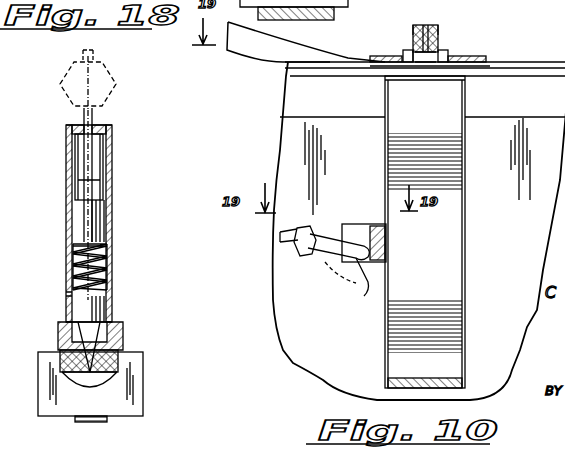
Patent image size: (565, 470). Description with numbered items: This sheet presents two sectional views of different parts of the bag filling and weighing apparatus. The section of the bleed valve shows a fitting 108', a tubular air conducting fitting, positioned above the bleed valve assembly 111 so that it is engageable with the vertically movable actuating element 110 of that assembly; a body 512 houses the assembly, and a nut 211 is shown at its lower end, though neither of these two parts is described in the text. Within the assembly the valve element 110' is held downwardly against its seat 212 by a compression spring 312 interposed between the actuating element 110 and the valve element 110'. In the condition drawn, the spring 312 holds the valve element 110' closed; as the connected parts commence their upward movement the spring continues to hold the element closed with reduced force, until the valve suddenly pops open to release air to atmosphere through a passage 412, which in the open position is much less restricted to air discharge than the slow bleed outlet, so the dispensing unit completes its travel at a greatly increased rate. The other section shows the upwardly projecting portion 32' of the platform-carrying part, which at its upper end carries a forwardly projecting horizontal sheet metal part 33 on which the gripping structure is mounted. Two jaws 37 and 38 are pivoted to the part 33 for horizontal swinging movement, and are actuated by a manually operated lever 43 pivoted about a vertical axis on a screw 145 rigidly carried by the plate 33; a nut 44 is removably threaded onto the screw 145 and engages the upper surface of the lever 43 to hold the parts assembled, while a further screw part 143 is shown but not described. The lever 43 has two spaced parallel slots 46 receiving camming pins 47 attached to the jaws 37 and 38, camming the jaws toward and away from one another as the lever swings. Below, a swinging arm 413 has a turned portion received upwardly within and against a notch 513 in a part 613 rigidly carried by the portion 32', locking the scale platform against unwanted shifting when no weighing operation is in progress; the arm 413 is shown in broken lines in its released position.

In FIG. 18, the tubular air conducting fitting 108' is at (118, 80).
In FIG. 18, the body 512 is at (112, 162).
In FIG. 18, the vertically movable actuating element 110 is at (130, 204).
In FIG. 18, the bleed valve assembly 111 is at (129, 226).
In FIG. 18, the compression spring 312 is at (107, 270).
In FIG. 18, the passage 412 is at (68, 304).
In FIG. 18, the valve element 110' is at (136, 309).
In FIG. 18, the nut 211 is at (122, 338).
In FIG. 18, the seat 212 is at (118, 375).
In FIG. 10, the manually operated lever 43 is at (333, 61).
In FIG. 10, the upwardly projecting portion 32' is at (425, 232).
In FIG. 10, the nut 44 is at (440, 28).
In FIG. 10, the camming pins 47 is at (405, 50).
In FIG. 10, the jaw 37 is at (382, 58).
In FIG. 10, the jaw 38 is at (470, 58).
In FIG. 10, the horizontal sheet metal part 33 is at (478, 73).
In FIG. 10, the slots 46 is at (410, 64).
In FIG. 10, the screw 145 is at (430, 30).
In FIG. 10, the bolt part 143 is at (425, 17).
In FIG. 10, the part 613 is at (362, 228).
In FIG. 10, the swinging arm 413 is at (326, 252).
In FIG. 10, the notch 513 is at (363, 288).